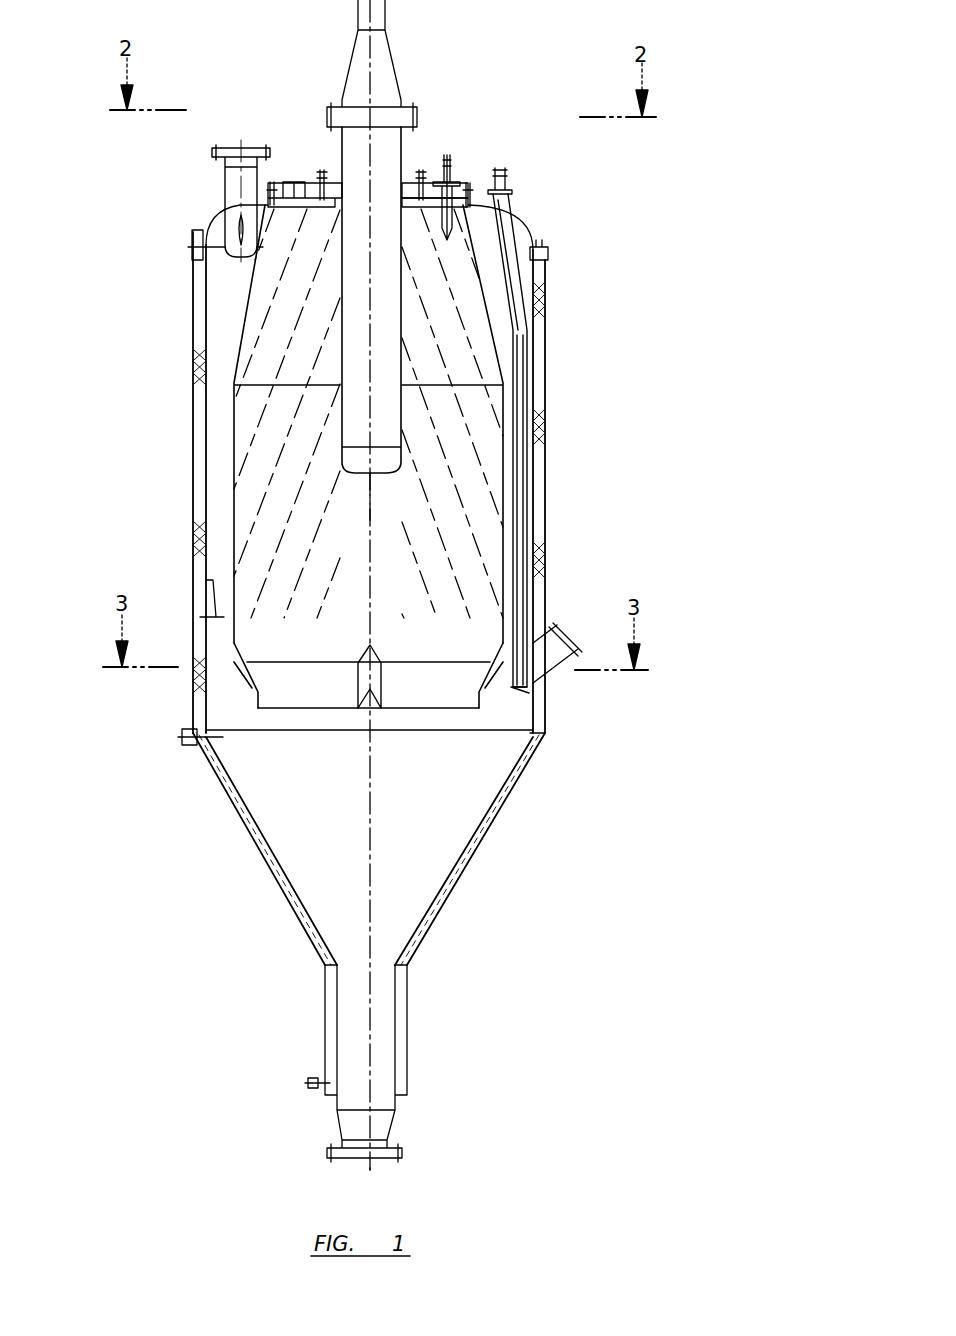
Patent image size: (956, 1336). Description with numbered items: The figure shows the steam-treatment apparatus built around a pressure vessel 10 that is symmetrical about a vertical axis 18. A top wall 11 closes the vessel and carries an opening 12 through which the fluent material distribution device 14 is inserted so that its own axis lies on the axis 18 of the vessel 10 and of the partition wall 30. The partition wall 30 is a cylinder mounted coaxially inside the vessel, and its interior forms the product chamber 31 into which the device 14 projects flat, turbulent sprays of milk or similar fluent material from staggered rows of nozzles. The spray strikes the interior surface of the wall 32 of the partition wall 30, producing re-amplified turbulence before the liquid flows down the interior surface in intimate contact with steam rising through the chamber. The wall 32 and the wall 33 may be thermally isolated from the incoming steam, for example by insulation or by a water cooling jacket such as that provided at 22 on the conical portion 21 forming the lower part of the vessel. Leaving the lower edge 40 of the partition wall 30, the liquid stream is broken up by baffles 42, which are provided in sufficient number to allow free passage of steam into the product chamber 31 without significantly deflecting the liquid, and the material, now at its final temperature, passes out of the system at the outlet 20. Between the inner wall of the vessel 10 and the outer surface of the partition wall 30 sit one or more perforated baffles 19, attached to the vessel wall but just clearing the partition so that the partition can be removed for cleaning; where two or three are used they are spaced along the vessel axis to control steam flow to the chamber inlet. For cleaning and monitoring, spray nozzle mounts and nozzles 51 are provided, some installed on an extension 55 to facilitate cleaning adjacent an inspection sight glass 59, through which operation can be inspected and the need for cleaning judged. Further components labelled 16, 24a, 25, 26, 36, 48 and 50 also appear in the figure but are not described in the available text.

The pressure vessel 10 is at (617, 432).
The top wall 11 is at (318, 182).
The opening 12 is at (412, 202).
The fluent material distribution device 14 is at (348, 312).
The vessel shell 16 is at (192, 453).
The axis of the vessel 18 is at (371, 514).
The baffle 19 is at (203, 580).
The outlet 20 is at (400, 1140).
The conical portion 21 is at (465, 837).
The water cooling jacket 22 is at (457, 880).
The inlet nozzle 24a is at (232, 199).
The nozzle opening 25 is at (243, 228).
The inner vessel 26 is at (463, 207).
The partition wall 30 is at (235, 410).
The product chamber 31 is at (235, 532).
The wall of the partition wall 32 is at (235, 473).
The wall 33 is at (245, 348).
The shell-cone joint 36 is at (536, 736).
The lower edge of the partition wall 40 is at (316, 708).
The baffles 42 is at (480, 678).
The valve 48 is at (452, 173).
The drain nozzle 50 is at (192, 745).
The spray nozzle mounts and nozzles 51 is at (492, 706).
The extension 55 is at (520, 297).
The inspection sight glass 59 is at (580, 630).